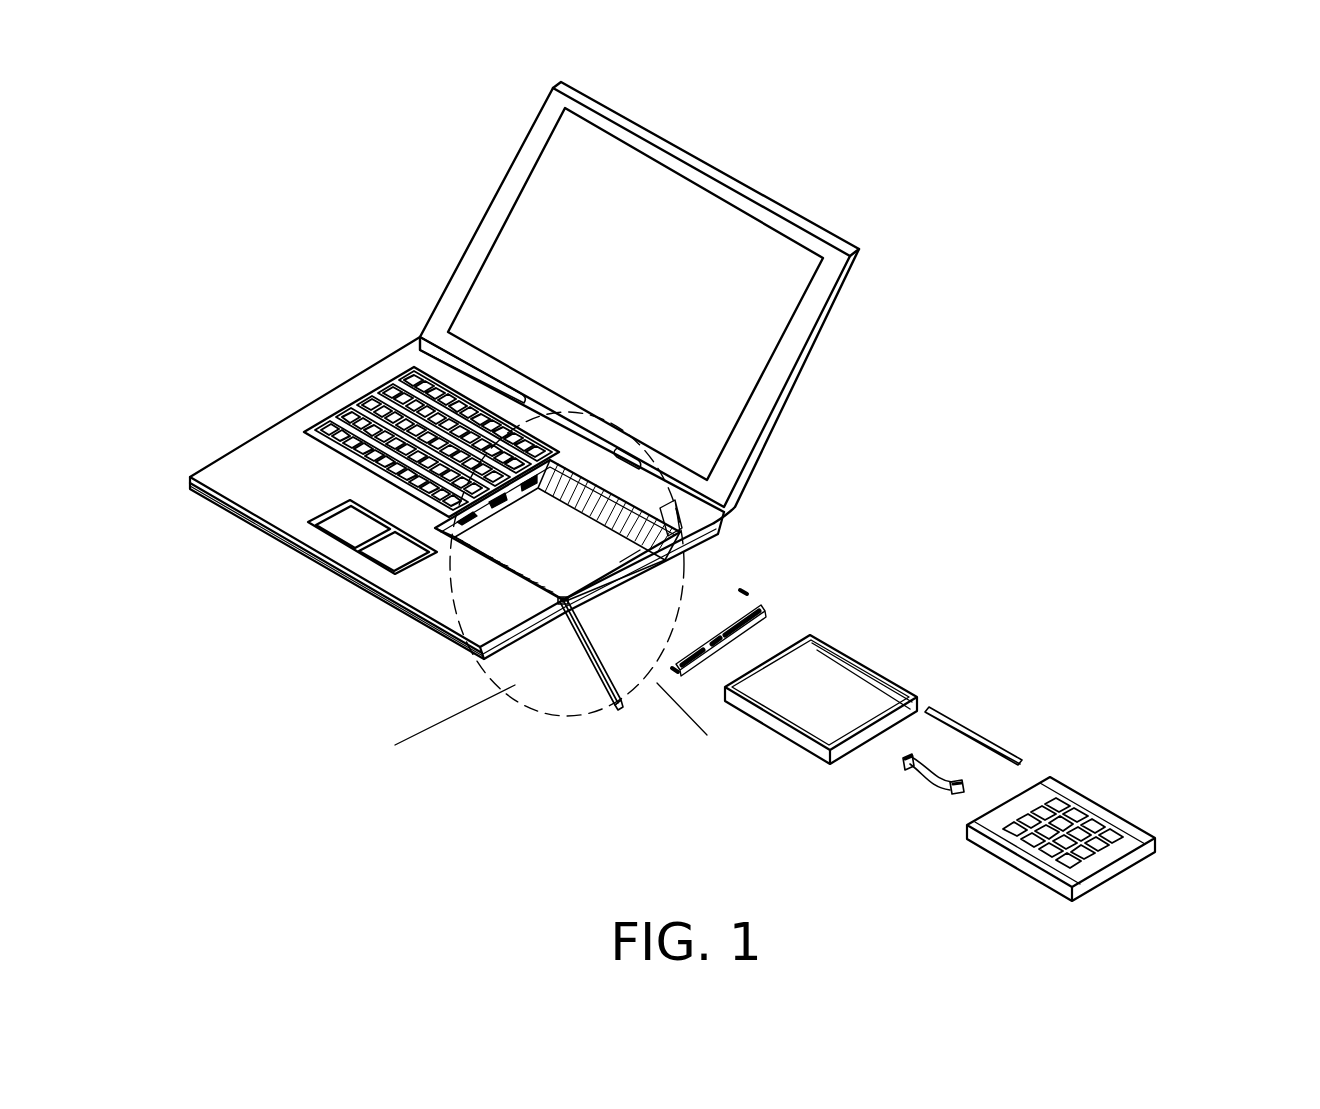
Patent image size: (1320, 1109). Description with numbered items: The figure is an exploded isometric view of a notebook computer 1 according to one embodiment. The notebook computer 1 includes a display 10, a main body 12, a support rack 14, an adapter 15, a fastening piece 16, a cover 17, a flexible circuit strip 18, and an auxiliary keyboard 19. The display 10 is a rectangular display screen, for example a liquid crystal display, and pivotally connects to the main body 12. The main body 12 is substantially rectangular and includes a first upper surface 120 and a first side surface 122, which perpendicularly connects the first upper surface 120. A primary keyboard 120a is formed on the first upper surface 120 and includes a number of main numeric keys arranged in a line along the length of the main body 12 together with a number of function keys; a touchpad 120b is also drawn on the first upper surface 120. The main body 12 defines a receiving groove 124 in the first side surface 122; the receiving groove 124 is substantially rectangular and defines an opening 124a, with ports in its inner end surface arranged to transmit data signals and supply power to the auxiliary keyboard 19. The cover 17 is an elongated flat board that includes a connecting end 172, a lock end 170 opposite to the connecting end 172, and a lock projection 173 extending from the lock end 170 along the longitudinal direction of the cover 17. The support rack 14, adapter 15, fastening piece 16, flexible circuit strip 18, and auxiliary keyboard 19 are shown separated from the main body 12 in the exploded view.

The notebook computer 1 is at (250, 190).
The display 10 is at (742, 250).
The main body 12 is at (268, 450).
The first upper surface 120 is at (420, 587).
The primary keyboard 120a is at (395, 392).
The touchpad 120b is at (378, 553).
The first side surface 122 is at (497, 647).
The receiving groove 124 is at (673, 508).
The opening 124a is at (627, 560).
The support rack 14 is at (830, 665).
The adapter 15 is at (760, 612).
The fastening piece 16 is at (990, 726).
The cover 17 is at (603, 767).
The lock end 170 is at (608, 693).
The connecting end 172 is at (562, 605).
The lock projection 173 is at (622, 705).
The flexible circuit strip 18 is at (925, 778).
The auxiliary keyboard 19 is at (1120, 840).